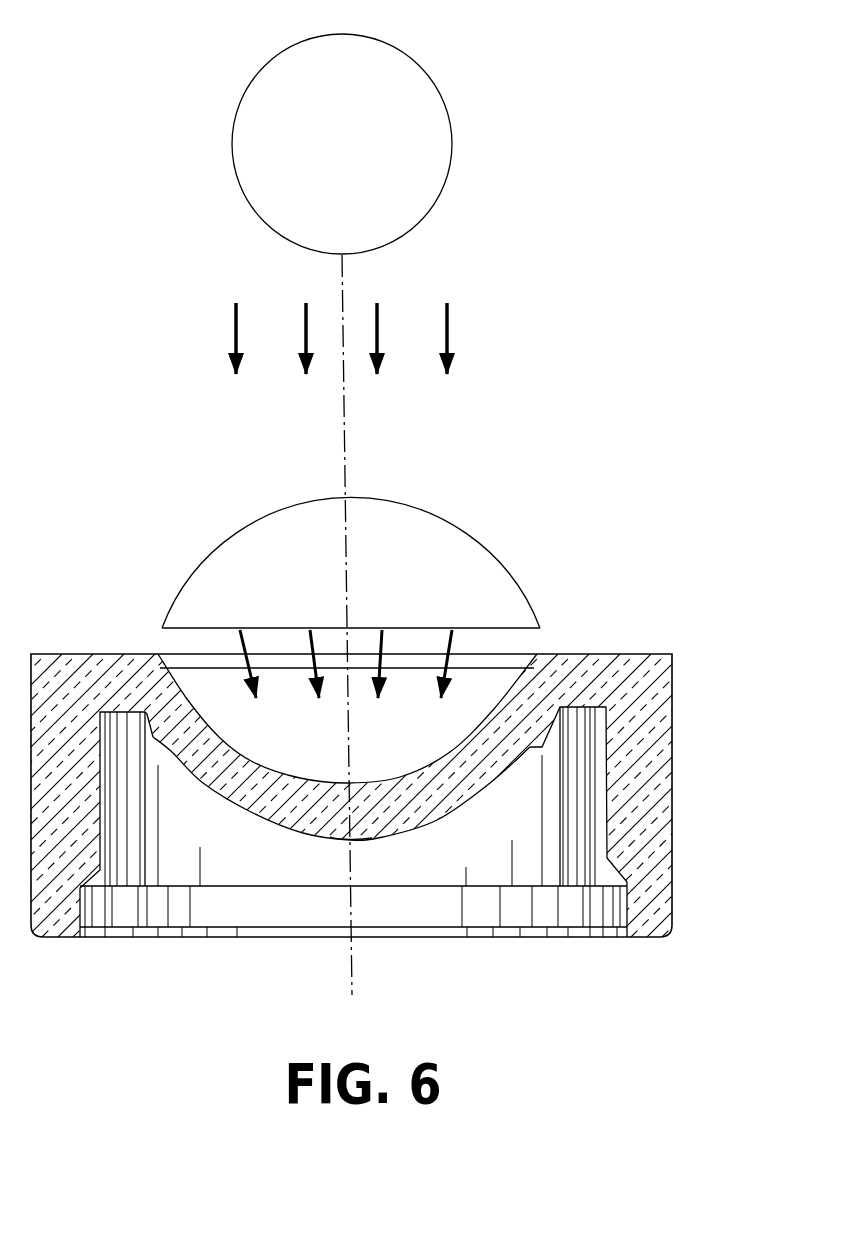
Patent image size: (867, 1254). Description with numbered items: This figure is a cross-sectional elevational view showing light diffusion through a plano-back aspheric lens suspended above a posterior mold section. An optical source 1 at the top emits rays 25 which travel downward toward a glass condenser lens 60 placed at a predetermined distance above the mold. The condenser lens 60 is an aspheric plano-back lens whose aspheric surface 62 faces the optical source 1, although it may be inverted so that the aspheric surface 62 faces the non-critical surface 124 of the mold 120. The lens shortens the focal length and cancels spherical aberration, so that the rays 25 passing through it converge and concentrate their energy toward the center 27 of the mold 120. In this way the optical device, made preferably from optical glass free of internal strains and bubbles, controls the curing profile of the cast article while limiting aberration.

The optical source 1 is at (456, 98).
The rays 25 is at (453, 313).
The condenser lens 60 is at (351, 582).
The aspheric surface 62 is at (235, 523).
The mold 120 is at (679, 700).
The non-critical surface 124 is at (230, 743).
The center 27 is at (356, 836).